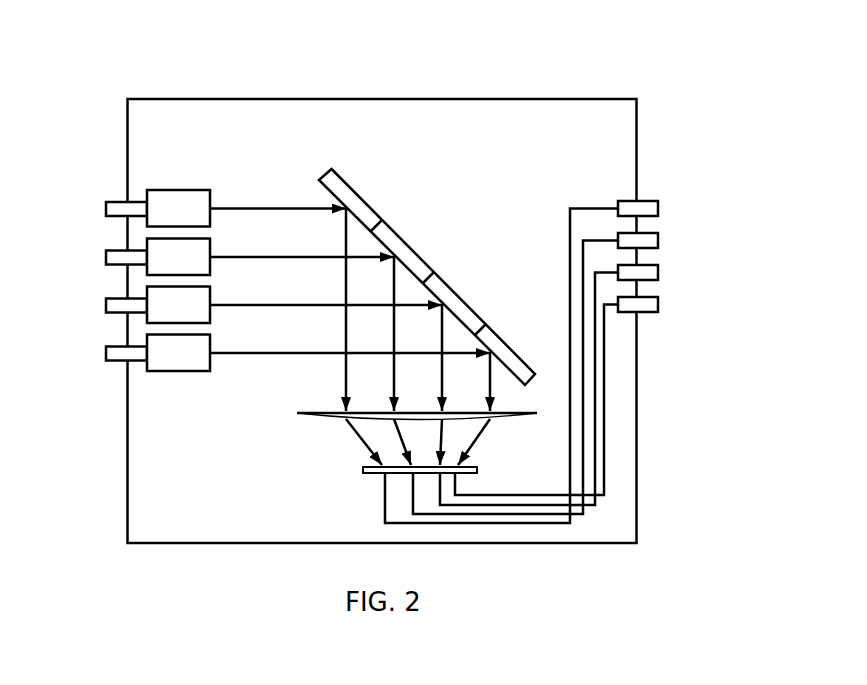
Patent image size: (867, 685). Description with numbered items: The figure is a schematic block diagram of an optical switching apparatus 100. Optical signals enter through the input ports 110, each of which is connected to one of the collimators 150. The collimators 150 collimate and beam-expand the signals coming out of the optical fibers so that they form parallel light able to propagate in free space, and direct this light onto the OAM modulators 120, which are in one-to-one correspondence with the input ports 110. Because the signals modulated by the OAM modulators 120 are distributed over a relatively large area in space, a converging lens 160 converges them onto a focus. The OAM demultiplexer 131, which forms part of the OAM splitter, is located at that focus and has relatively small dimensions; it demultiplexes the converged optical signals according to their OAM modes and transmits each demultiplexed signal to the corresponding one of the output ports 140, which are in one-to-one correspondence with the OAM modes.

The optical switching apparatus 100 is at (137, 64).
The input ports 110 is at (98, 254).
The collimators 150 is at (273, 231).
The OAM modulators 120 is at (398, 266).
The converging lens 160 is at (404, 444).
The OAM demultiplexer 131 is at (465, 369).
The output ports 140 is at (670, 231).